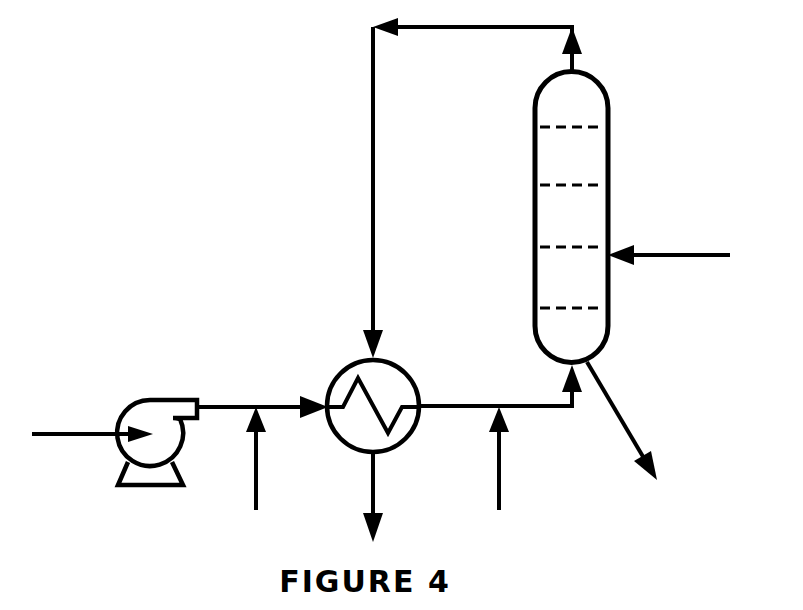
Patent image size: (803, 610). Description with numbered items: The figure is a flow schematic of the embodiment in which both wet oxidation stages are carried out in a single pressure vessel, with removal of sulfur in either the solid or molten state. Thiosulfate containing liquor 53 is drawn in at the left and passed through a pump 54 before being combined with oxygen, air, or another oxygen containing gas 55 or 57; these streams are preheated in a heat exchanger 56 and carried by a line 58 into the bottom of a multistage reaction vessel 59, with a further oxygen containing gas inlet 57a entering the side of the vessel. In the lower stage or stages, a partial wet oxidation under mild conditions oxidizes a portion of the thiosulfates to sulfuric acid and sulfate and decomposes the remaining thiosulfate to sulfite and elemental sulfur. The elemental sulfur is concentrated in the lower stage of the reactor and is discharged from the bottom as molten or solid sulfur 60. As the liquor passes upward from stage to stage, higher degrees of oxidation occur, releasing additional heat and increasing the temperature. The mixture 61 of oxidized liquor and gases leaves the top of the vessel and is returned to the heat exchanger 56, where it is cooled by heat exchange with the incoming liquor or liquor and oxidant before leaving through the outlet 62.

The thiosulfate containing liquor 53 is at (48, 433).
The pump 54 is at (137, 418).
The oxygen containing gas 55 is at (253, 460).
The heat exchanger 56 is at (367, 375).
The oxygen containing gas 57 is at (500, 460).
The inlet line to column 57a is at (648, 257).
The line to column 58 is at (575, 390).
The multistage reaction vessel 59 is at (597, 220).
The molten or solid sulfur 60 is at (618, 407).
The mixture of oxidized liquor and gases 61 is at (372, 190).
The outlet line 62 is at (378, 460).